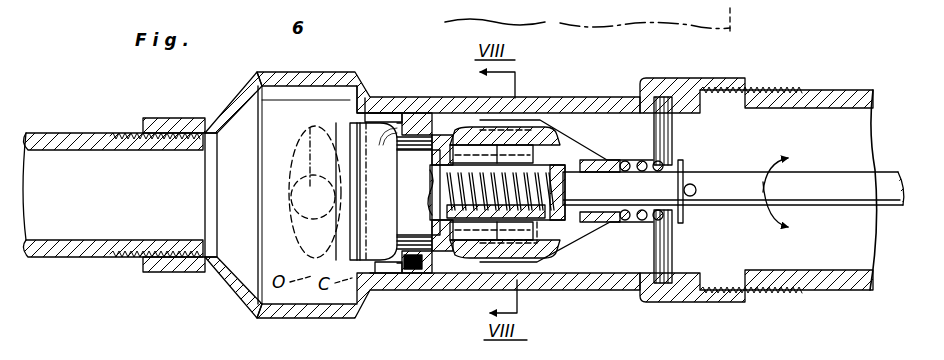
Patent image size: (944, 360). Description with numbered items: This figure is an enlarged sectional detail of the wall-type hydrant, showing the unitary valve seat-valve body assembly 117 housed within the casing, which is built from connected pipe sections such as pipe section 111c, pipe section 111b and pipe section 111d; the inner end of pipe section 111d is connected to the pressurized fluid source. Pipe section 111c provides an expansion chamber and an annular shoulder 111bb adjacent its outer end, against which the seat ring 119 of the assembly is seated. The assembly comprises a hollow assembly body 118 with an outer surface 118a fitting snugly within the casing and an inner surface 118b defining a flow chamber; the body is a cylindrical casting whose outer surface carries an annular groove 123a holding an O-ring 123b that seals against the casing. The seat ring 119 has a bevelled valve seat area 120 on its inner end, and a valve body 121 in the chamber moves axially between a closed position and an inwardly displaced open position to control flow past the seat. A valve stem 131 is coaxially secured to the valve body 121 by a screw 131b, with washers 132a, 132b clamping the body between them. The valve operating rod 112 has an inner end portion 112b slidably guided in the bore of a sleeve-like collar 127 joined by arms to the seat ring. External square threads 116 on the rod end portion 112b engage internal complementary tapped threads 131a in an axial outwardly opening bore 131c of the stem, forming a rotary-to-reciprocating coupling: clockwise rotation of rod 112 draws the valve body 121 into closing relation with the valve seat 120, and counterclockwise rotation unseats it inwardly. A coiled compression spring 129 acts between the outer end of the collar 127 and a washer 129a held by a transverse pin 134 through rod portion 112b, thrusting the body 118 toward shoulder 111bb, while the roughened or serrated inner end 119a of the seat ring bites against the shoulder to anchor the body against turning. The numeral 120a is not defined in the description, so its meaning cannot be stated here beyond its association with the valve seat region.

The pipe section 111d is at (52, 136).
The pipe section 111c is at (297, 72).
The pipe section 111b is at (812, 96).
The annular shoulder 111bb is at (372, 122).
The valve operating rod 112 is at (797, 182).
The inner end portion of the valve actuating rod 112b is at (703, 178).
The external square threads 116 is at (547, 166).
The unitary valve seat-valve body assembly 117 is at (634, 116).
The hollow assembly body 118 is at (640, 133).
The outer surface 118a is at (415, 118).
The inner surface 118b is at (560, 222).
The seat ring 119 is at (428, 275).
The roughened or serrated inner end 119a is at (381, 288).
The bevelled valve seat area 120 is at (395, 246).
The ball member outline 120a is at (405, 133).
The valve body 121 is at (362, 120).
The annular groove 123a is at (447, 125).
The O-ring 123b is at (445, 5).
The sleeve-like collar 127 is at (582, 223).
The coiled compression spring 129 is at (659, 163).
The washer 129a is at (684, 202).
The valve stem 131 is at (450, 165).
The internal complementary tapped threads 131a is at (487, 168).
The screw 131b is at (338, 196).
The axial outwardly opening bore 131c is at (430, 225).
The washer 132a is at (400, 268).
The washer 132b is at (342, 128).
The transverse pin 134 is at (697, 196).